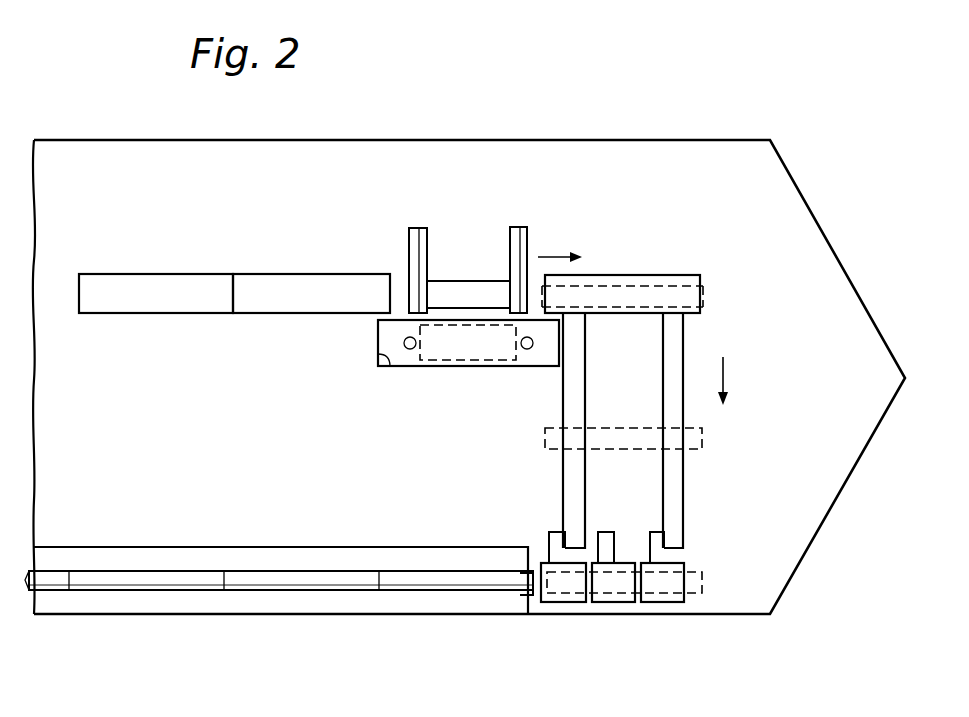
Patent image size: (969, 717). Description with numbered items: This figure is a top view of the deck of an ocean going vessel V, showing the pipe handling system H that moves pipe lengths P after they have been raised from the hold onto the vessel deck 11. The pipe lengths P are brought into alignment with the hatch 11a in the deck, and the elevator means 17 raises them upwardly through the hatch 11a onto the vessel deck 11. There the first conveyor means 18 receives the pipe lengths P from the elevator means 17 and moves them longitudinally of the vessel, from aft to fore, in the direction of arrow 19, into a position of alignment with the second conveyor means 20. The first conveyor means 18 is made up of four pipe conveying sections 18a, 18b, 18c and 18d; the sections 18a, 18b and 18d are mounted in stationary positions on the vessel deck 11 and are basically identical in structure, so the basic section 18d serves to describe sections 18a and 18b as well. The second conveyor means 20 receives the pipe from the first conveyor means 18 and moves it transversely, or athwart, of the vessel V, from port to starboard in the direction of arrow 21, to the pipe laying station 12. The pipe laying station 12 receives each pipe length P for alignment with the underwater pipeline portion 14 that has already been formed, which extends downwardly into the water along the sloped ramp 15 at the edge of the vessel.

The ocean going vessel V is at (800, 185).
The vessel deck 11 is at (430, 295).
The hatch 11a is at (378, 355).
The pipe laying station 12 is at (611, 608).
The underwater pipeline portion 14 is at (293, 584).
The sloped ramp 15 is at (165, 603).
The elevator means 17 is at (405, 358).
The first conveyor means 18 is at (234, 265).
The pipe conveying section 18a is at (165, 274).
The pipe conveying section 18b is at (347, 274).
The pipe conveying section 18c is at (428, 247).
The pipe conveying section 18d is at (693, 275).
The arrow 19 is at (553, 257).
The second conveyor means 20 is at (694, 481).
The arrow 21 is at (724, 372).
The pipe handling system H is at (683, 256).
The pipe lengths P is at (705, 440).